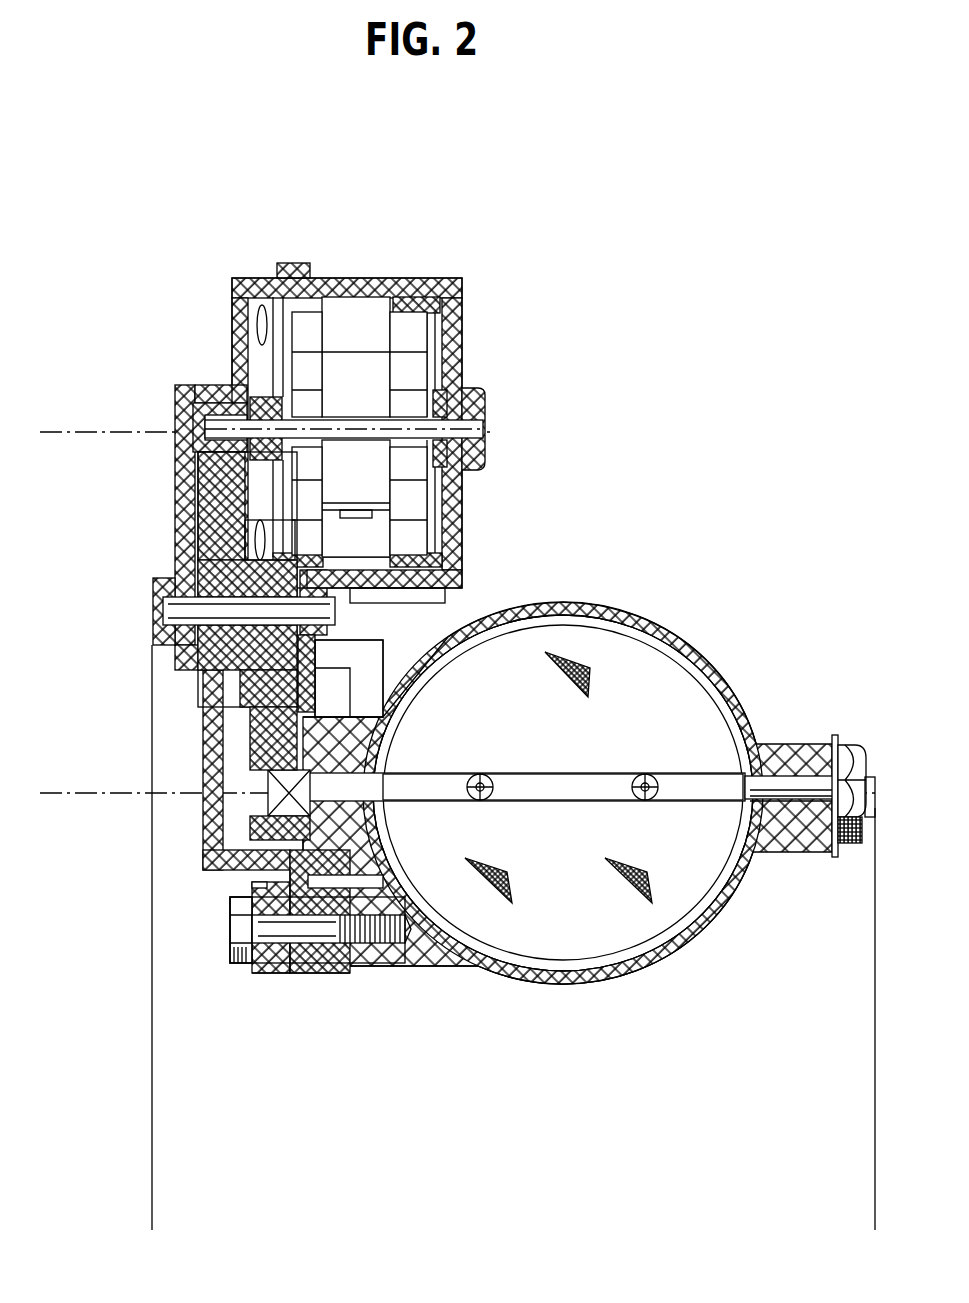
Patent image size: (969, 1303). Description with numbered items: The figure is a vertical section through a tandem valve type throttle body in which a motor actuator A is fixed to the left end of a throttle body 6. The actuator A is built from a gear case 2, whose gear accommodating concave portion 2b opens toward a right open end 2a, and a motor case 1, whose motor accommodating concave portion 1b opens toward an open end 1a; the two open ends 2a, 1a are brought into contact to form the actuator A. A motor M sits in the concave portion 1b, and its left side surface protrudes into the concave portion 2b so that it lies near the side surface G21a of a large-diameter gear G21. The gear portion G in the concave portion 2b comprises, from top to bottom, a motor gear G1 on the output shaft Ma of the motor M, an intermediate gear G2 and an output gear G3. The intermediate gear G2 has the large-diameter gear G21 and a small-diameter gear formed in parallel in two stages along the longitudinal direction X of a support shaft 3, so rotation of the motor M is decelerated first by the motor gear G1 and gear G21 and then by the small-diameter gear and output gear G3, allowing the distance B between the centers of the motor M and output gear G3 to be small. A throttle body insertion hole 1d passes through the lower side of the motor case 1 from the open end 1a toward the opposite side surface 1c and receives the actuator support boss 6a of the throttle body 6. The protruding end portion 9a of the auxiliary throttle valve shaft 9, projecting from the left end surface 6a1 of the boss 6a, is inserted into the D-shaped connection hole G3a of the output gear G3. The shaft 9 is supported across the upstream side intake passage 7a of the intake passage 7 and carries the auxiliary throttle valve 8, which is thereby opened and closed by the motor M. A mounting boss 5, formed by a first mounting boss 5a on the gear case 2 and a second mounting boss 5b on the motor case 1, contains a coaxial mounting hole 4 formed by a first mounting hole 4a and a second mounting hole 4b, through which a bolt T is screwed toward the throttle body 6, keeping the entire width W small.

The motor case 1 is at (462, 285).
The open end of motor case 1a is at (298, 975).
The motor accommodating concave portion 1b is at (446, 322).
The opposite side surface of motor case 1c is at (355, 710).
The throttle body insertion hole 1d is at (333, 717).
The gear case 2 is at (234, 283).
The open end of gear case 2a is at (285, 975).
The gear accommodating concave portion 2b is at (192, 460).
The support shaft 3 is at (168, 592).
The mounting hole 4 is at (260, 975).
The first mounting hole 4a is at (214, 965).
The second mounting hole 4b is at (345, 968).
The mounting boss 5 is at (270, 975).
The first mounting boss 5a is at (217, 989).
The second mounting boss 5b is at (322, 975).
The throttle body 6 is at (604, 605).
The actuator support boss 6a is at (362, 822).
The left end surface of actuator support boss 6a1 is at (322, 752).
The intake passage 7 is at (746, 615).
The upstream side intake passage 7a is at (628, 660).
The auxiliary throttle valve 8 is at (668, 706).
The auxiliary throttle valve shaft 9 is at (568, 805).
The protruding end portion 9a is at (312, 793).
The motor actuator A is at (320, 188).
The distance between motor center and output gear center B is at (48, 793).
The gear portion G is at (196, 500).
The motor gear G1 is at (222, 400).
The intermediate gear G2 is at (246, 684).
The large-diameter gear G21 is at (177, 608).
The side surface of large-diameter gear G21a is at (236, 534).
The output gear G3 is at (262, 738).
The connection hole G3a is at (256, 816).
The motor M is at (330, 392).
The output shaft of motor Ma is at (359, 498).
The bolt T is at (235, 920).
The entire width W is at (873, 1222).
The longitudinal direction of support shaft X is at (358, 611).